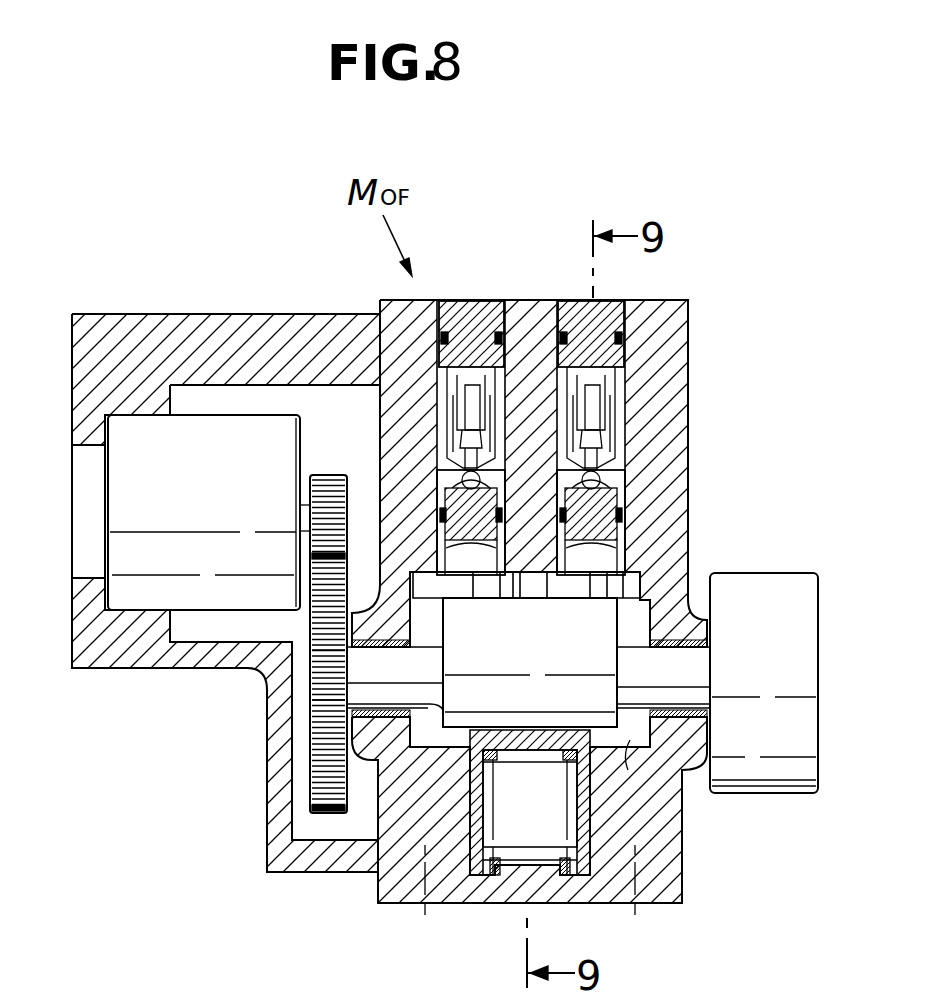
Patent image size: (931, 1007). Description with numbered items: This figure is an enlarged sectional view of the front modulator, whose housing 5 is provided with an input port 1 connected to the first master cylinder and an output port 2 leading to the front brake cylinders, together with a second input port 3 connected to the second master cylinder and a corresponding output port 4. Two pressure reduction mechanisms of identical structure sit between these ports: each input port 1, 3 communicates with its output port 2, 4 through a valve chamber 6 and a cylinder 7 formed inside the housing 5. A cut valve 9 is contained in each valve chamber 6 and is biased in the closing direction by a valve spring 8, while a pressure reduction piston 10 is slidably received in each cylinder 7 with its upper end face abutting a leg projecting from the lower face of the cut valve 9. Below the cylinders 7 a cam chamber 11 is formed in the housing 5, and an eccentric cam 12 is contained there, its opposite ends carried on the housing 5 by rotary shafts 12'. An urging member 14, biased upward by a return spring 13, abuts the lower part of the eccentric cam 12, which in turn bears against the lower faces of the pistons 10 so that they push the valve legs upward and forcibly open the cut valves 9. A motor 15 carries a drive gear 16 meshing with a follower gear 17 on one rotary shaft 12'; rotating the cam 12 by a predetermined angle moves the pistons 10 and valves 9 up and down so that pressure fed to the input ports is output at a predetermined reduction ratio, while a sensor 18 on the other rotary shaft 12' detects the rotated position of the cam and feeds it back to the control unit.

The input port 1 is at (612, 360).
The output port 2 is at (613, 481).
The input port 3 is at (442, 371).
The output port 4 is at (437, 501).
The housing 5 is at (676, 331).
The valve chamber 6 is at (568, 432).
The cylinder 7 is at (566, 540).
The valve spring 8 is at (568, 380).
The cut valve 9 is at (594, 434).
The pressure reduction piston 10 is at (603, 557).
The cam chamber 11 is at (627, 760).
The eccentric cam 12 is at (530, 662).
The rotary shaft 12' is at (482, 677).
The return spring 13 is at (493, 753).
The urging member 14 is at (470, 789).
The motor 15 is at (204, 522).
The drive gear 16 is at (336, 480).
The follower gear 17 is at (307, 780).
The sensor 18 is at (770, 709).